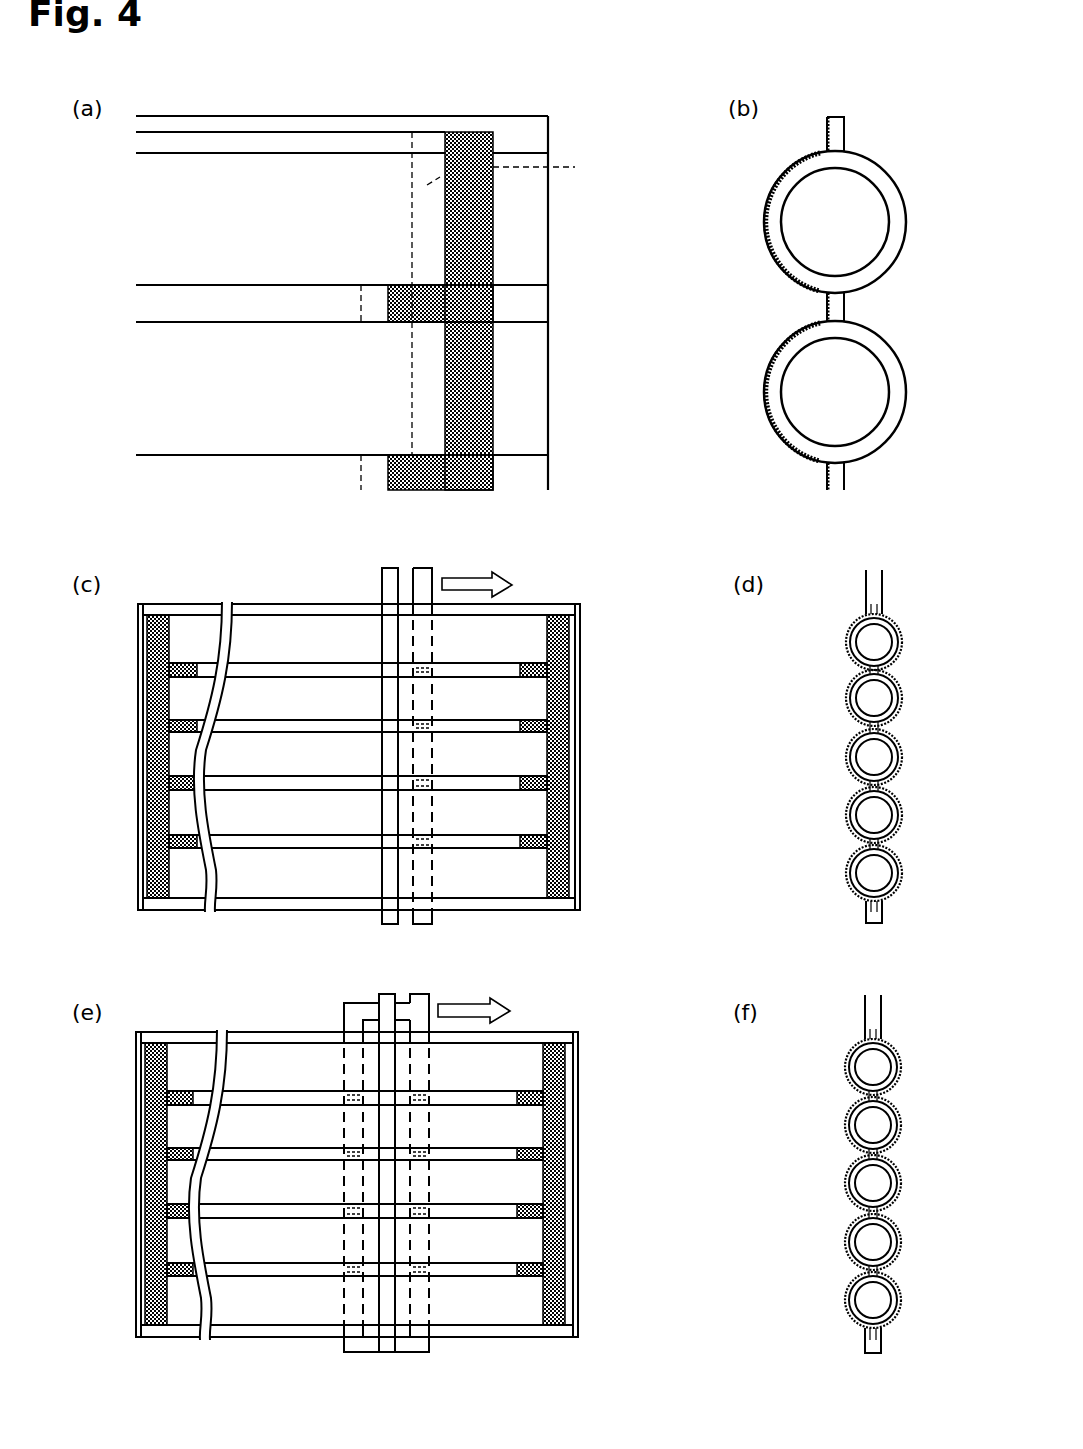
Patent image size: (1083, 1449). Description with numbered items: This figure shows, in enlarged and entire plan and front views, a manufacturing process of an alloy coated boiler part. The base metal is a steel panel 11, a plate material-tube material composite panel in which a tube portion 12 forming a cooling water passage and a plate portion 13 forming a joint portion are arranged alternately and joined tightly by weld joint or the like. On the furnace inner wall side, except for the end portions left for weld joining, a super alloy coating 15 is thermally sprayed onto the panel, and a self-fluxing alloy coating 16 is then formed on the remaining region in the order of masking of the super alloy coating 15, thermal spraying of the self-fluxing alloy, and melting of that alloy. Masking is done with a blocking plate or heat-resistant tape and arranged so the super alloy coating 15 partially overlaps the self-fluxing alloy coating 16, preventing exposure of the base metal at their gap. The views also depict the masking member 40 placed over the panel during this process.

The steel panel 11 is at (883, 180).
The tube portion 12 is at (548, 224).
The plate portion 13 is at (548, 304).
The super alloy coating 15 is at (493, 180).
The self-fluxing alloy coating 16 is at (155, 212).
The resin coating / jig 40 is at (382, 588).